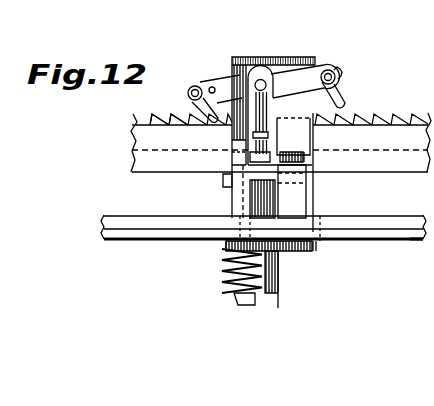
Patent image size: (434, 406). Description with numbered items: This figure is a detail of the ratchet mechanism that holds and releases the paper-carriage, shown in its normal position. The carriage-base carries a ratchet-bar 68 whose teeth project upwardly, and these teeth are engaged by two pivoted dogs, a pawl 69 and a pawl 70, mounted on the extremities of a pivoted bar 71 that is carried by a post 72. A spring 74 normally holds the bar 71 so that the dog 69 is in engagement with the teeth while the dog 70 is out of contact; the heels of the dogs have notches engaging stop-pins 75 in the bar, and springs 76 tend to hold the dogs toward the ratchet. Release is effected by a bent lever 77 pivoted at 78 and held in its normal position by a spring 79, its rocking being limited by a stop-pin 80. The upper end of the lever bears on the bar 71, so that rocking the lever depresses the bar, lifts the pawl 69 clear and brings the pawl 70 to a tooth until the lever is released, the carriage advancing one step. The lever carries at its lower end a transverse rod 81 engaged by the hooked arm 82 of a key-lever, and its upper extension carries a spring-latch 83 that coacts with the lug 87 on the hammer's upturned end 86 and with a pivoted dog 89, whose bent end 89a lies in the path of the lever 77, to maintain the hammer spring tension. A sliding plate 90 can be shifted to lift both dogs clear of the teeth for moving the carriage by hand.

The ratchet-bar 68 is at (145, 122).
The pawl 69 is at (190, 98).
The pawl 70 is at (347, 100).
The pivoted bar 71 is at (287, 62).
The post 72 is at (263, 72).
The spring 74 is at (276, 118).
The stop-pin 75 is at (333, 68).
The spring 76 is at (214, 86).
The bent lever 77 is at (239, 57).
The pivot 78 is at (243, 200).
The spring 79 is at (236, 270).
The stop-pin 80 is at (223, 245).
The bar or rod 81 is at (205, 228).
The hooked arm 82 is at (421, 260).
The spring-latch 83 is at (234, 141).
The upturned end 86 is at (317, 135).
The lug 87 is at (292, 155).
The pivoted dog 89 is at (292, 191).
The bent end 89a is at (275, 251).
The sliding plate 90 is at (388, 132).